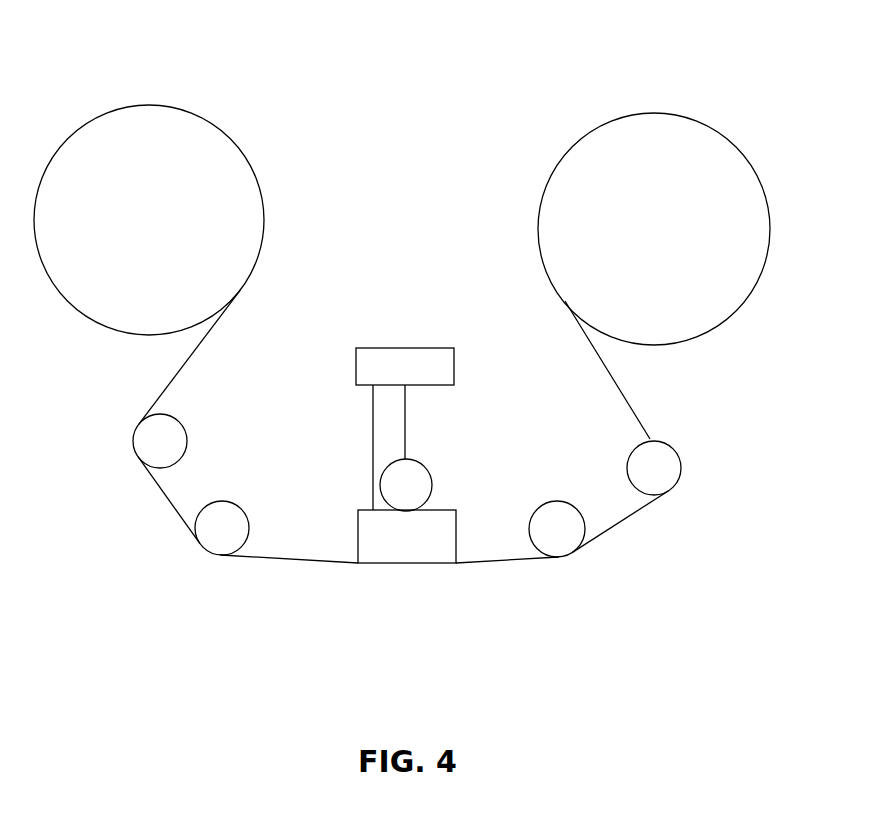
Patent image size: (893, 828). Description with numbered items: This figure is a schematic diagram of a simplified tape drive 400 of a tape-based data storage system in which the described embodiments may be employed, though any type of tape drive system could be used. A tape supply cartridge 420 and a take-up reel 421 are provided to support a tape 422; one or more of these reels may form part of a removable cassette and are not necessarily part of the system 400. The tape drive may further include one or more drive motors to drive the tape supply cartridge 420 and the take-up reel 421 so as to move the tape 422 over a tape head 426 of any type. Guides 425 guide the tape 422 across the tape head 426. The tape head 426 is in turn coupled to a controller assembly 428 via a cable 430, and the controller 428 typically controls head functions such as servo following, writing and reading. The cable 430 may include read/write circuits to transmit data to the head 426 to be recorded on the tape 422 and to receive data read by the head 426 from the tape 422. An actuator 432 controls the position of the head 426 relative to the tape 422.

The tape drive 400 is at (438, 100).
The tape supply cartridge 420 is at (150, 104).
The take-up reel 421 is at (653, 113).
The tape 422 is at (292, 560).
The guides 425 is at (185, 433).
The tape head 426 is at (457, 537).
The controller assembly 428 is at (402, 348).
The cable 430 is at (373, 485).
The actuator 432 is at (423, 465).